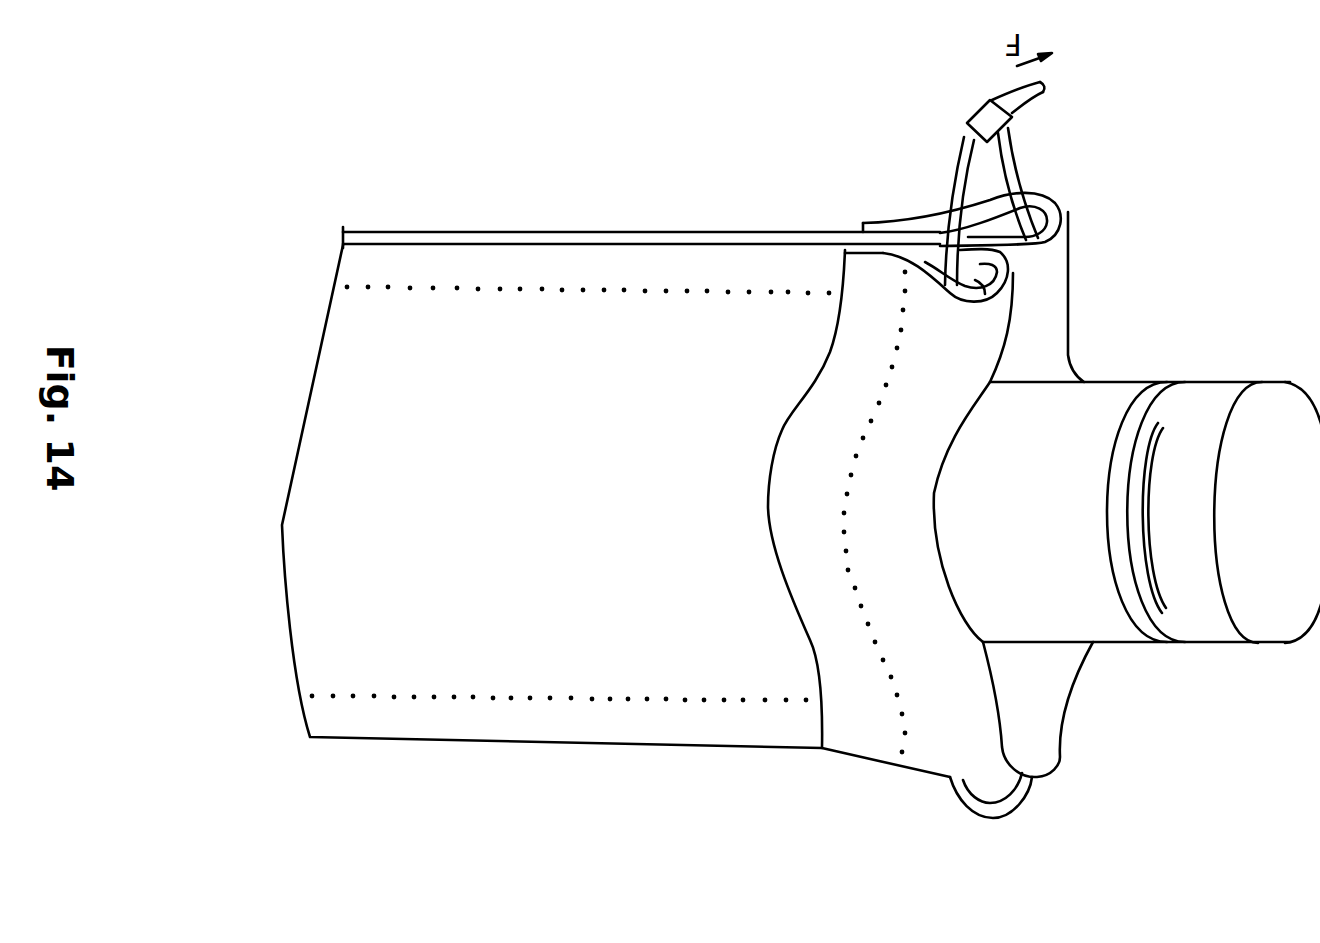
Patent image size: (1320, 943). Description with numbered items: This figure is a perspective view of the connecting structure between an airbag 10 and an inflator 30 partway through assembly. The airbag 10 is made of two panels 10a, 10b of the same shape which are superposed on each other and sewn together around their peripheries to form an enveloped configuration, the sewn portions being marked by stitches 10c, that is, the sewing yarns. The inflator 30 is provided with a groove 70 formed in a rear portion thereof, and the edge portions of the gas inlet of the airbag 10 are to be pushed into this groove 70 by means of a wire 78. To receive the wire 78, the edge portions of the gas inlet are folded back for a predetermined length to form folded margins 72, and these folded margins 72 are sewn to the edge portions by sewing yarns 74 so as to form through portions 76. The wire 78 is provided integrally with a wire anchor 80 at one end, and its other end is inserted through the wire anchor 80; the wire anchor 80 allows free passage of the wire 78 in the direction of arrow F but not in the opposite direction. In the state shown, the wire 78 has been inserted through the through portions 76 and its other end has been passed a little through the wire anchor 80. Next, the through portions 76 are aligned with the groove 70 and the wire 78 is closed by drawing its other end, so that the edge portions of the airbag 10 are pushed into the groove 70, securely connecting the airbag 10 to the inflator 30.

The airbag 10 is at (395, 744).
The panel 10a is at (522, 229).
The panel 10b is at (343, 370).
The stitches 10c is at (563, 293).
The inflator 30 is at (1221, 634).
The groove 70 is at (1133, 523).
The folded margins 72 is at (787, 530).
The sewing yarns 74 is at (853, 470).
The through portions 76 is at (1046, 186).
The wire 78 is at (957, 163).
The wire anchor 80 is at (970, 110).